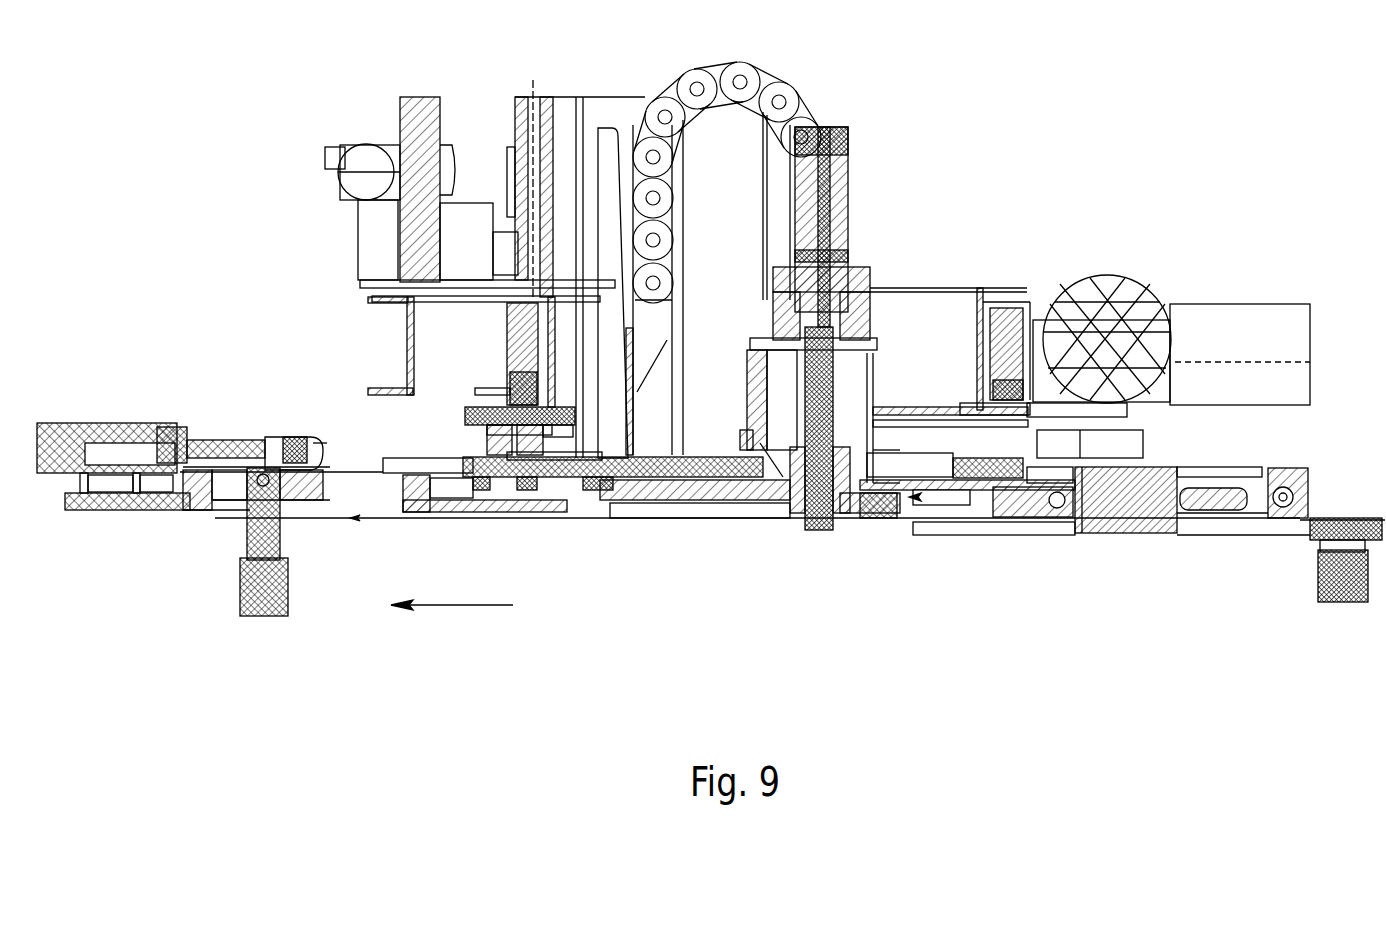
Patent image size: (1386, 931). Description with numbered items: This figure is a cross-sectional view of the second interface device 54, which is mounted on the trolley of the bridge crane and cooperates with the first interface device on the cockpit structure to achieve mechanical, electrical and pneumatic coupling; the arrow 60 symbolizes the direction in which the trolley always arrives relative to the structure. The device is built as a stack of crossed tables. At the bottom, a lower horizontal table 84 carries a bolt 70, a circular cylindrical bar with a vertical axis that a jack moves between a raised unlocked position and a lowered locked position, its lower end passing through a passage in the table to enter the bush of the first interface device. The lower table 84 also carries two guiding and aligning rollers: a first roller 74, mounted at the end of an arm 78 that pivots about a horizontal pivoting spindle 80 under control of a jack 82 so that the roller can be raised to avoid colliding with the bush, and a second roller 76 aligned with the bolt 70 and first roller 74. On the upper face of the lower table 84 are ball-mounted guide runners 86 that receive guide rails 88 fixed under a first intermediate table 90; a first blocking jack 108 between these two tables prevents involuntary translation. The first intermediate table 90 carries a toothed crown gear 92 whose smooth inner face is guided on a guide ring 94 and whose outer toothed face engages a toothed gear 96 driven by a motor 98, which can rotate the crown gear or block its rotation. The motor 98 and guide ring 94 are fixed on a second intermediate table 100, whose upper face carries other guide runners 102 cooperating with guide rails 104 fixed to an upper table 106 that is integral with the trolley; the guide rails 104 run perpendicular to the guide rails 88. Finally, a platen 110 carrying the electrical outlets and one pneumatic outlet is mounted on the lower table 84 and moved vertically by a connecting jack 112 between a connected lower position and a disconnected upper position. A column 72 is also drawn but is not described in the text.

The second interface device 54 is at (262, 411).
The arrow 60 is at (463, 606).
The bolt 70 is at (808, 538).
The column 72 is at (848, 176).
The first roller 74 is at (240, 590).
The second roller 76 is at (1316, 595).
The arm 78 is at (280, 540).
The pivoting spindle 80 is at (262, 483).
The jack 82 is at (104, 435).
The lower horizontal table 84 is at (856, 528).
The guide runners 86 is at (565, 512).
The guide rails 88 is at (497, 495).
The first intermediate table 90 is at (1295, 470).
The toothed crown gear 92 is at (1013, 457).
The guide ring 94 is at (880, 449).
The toothed gear 96 is at (1143, 447).
The motor 98 is at (1143, 415).
The second intermediate table 100 is at (478, 425).
The guide runners 102 is at (505, 393).
The guide rails 104 is at (505, 402).
The upper table 106 is at (505, 385).
The first blocking jack 108 is at (1155, 522).
The platen 110 is at (667, 505).
The connecting jack 112 is at (628, 110).